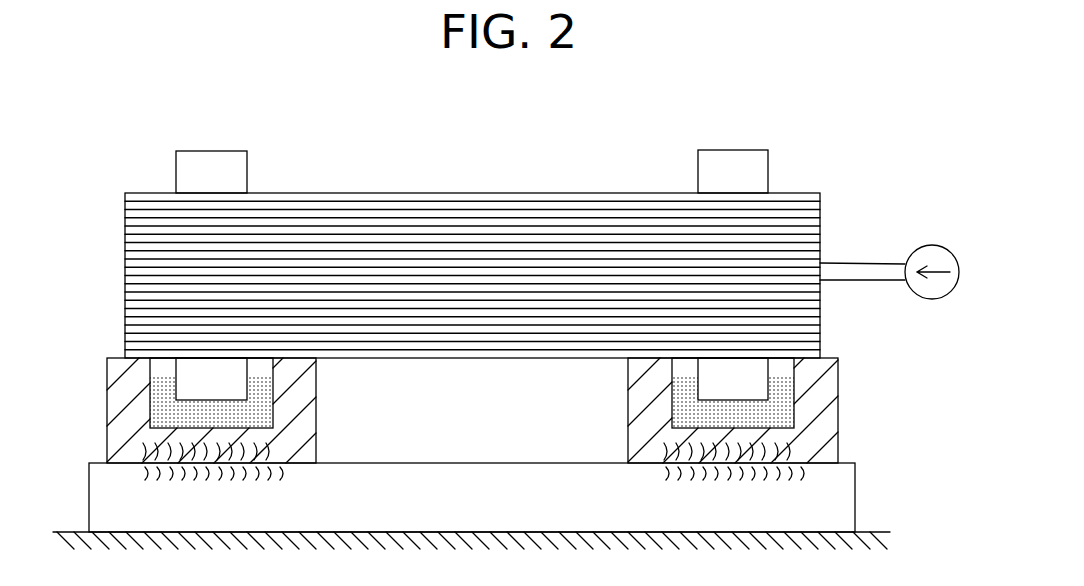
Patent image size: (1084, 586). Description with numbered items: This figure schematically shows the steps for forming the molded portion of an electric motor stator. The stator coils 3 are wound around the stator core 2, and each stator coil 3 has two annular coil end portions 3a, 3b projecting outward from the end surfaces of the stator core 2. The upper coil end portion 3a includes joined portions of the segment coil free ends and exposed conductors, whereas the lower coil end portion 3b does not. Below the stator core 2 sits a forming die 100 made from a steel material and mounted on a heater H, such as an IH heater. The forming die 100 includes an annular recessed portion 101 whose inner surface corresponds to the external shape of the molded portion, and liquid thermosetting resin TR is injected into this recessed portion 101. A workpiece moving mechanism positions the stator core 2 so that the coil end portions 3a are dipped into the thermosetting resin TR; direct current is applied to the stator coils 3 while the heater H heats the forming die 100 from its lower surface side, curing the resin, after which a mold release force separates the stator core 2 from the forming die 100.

The stator core 2 is at (467, 200).
The stator coil 3 is at (772, 177).
The coil end portion 3a is at (210, 378).
The coil end portion 3b is at (183, 172).
The thermosetting resin TR is at (165, 412).
The recessed portion 101 is at (685, 380).
The forming die 100 is at (840, 415).
The heater H is at (468, 472).